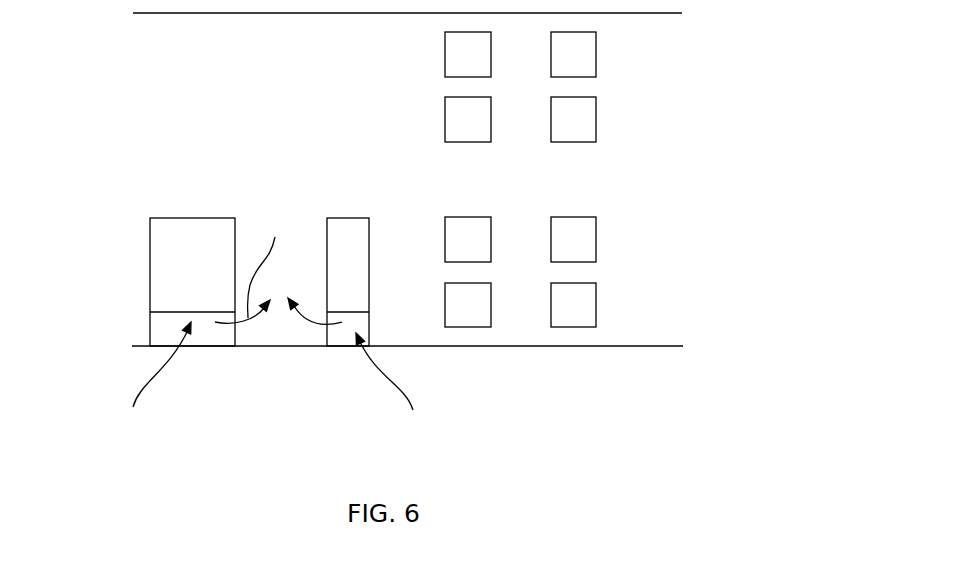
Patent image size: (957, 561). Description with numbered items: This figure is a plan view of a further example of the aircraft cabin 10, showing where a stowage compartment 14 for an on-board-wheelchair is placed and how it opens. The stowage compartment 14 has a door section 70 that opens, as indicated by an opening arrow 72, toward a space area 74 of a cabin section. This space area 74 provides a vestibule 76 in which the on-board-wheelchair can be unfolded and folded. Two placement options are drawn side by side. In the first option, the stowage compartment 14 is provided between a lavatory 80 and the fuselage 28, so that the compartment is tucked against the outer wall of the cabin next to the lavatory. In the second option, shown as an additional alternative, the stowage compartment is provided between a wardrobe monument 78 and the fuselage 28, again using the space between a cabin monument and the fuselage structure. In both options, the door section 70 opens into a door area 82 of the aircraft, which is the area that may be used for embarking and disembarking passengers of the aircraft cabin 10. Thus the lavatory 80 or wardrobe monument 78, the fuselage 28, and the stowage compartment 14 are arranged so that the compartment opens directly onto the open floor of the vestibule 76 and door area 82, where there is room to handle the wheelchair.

The aircraft cabin 10 is at (683, 76).
The stowage compartment 14 is at (271, 383).
The fuselage 28 is at (563, 347).
The door section 70 is at (238, 331).
The opening arrow 72 is at (268, 268).
The space area 74 is at (314, 268).
The vestibule 76 is at (312, 327).
The wardrobe monument 78 is at (370, 262).
The lavatory 80 is at (150, 238).
The door area 82 is at (278, 332).